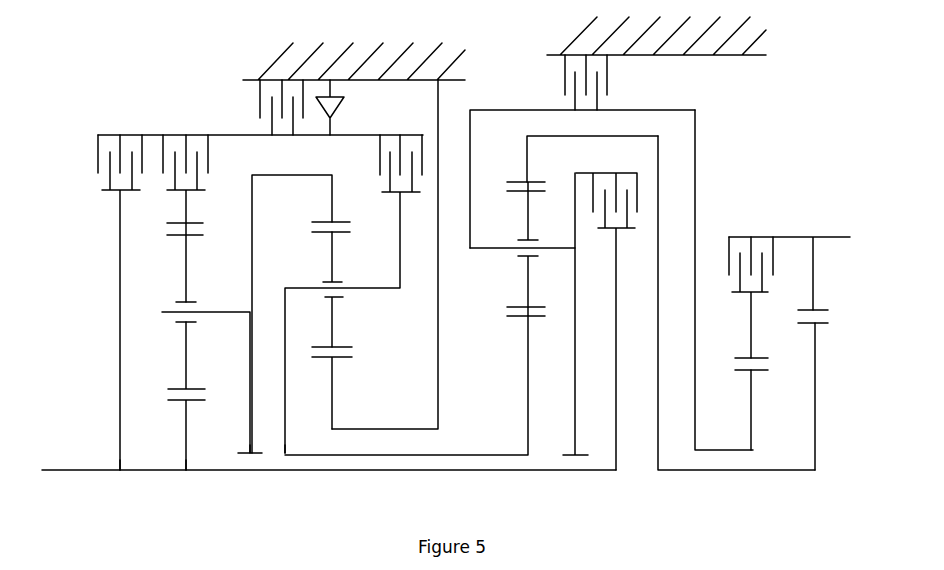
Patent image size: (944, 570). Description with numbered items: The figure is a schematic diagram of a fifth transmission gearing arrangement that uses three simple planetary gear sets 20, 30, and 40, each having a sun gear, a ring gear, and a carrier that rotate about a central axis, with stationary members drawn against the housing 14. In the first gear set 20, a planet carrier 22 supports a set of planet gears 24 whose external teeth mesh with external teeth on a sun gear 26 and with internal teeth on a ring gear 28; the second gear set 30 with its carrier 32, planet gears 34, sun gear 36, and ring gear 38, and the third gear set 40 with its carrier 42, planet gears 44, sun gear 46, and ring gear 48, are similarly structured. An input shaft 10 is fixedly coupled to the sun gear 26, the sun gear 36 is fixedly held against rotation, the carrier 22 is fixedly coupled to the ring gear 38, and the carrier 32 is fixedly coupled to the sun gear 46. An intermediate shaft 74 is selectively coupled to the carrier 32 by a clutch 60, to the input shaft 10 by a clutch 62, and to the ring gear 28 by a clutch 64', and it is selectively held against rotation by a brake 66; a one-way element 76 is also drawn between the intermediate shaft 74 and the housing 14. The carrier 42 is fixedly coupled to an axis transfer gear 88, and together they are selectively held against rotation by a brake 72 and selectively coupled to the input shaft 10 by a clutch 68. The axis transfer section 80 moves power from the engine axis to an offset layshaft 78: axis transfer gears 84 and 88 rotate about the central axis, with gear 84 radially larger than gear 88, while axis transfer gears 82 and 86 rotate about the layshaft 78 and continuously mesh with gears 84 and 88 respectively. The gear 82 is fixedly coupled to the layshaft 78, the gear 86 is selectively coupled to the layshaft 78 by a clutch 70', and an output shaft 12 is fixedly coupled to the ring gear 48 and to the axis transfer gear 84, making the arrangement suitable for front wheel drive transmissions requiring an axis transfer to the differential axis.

The input shaft 10 is at (47, 470).
The output shaft 12 is at (722, 472).
The stationary housing 14 is at (273, 55).
The first planetary gear set 20 is at (158, 483).
The planet carrier 22 is at (253, 277).
The planet gears 24 is at (183, 275).
The sun gear 26 is at (187, 455).
The ring gear 28 is at (182, 213).
The second planetary gear set 30 is at (295, 476).
The carrier 32 is at (398, 250).
The planet gears 34 is at (335, 268).
The sun gear 36 is at (332, 387).
The ring gear 38 is at (330, 200).
The third planetary gear set 40 is at (582, 308).
The carrier 42 is at (575, 270).
The planet gears 44 is at (538, 228).
The sun gear 46 is at (528, 348).
The ring gear 48 is at (527, 157).
The clutch 60 is at (412, 131).
The clutch 62 is at (98, 147).
The clutch 64' is at (224, 179).
The brake 66 is at (260, 98).
The clutch 68 is at (595, 173).
The clutch 70' is at (748, 264).
The brake 72 is at (605, 77).
The intermediate shaft 74 is at (367, 140).
The one-way clutch 76 is at (345, 102).
The layshaft 78 is at (787, 235).
The final drive gear set 80 is at (740, 308).
The axis transfer gear 82 is at (807, 287).
The axis transfer gear 84 is at (813, 375).
The axis transfer gear 86 is at (750, 323).
The axis transfer gear 88 is at (752, 387).